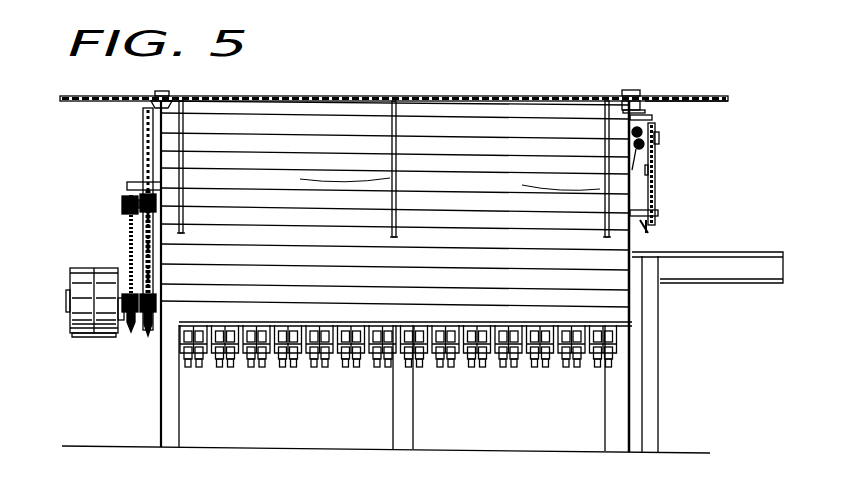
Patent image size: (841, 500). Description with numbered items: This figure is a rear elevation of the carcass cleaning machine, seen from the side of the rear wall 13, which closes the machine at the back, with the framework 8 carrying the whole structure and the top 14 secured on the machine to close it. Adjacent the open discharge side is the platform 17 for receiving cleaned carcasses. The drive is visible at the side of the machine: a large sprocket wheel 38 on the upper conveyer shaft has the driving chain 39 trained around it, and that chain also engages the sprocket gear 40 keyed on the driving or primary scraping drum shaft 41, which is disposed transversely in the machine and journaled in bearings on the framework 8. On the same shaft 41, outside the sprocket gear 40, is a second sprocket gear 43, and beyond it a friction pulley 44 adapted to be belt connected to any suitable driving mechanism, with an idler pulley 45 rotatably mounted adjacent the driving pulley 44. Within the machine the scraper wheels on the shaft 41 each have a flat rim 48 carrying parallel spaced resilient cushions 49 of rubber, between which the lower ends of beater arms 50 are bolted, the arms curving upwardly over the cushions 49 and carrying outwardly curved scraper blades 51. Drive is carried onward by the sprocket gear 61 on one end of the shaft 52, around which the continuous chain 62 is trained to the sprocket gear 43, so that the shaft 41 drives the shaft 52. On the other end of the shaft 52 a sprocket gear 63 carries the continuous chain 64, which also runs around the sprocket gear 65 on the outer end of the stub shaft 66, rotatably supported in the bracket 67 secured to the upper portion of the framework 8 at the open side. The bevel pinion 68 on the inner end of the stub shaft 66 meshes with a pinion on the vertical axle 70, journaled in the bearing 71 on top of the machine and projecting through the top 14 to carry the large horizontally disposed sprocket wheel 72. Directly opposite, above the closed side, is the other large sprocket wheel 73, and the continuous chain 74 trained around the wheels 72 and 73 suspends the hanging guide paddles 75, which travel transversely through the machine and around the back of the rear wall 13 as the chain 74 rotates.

The framework 8 is at (386, 389).
The rear wall 13 is at (395, 276).
The top 14 is at (492, 118).
The platform 17 is at (697, 256).
The large sprocket wheel 38 is at (143, 112).
The driving chain 39 is at (153, 284).
The sprocket gear 40 is at (149, 322).
The driving or primary scraping drum shaft 41 is at (160, 305).
The second sprocket gear 43 is at (124, 324).
The friction pulley 44 is at (104, 339).
The idler pulley 45 is at (76, 274).
The rim 48 is at (596, 330).
The resilient supports or cushions 49 is at (590, 337).
The beater arms 50 is at (590, 350).
The scraper blades 51 is at (596, 373).
The shaft 52 is at (649, 229).
The sprocket gear 61 is at (122, 205).
The continuous chain 62 is at (129, 238).
The sprocket gear 63 is at (658, 214).
The continuous chain 64 is at (656, 176).
The sprocket gear 65 is at (659, 139).
The stub shaft 66 is at (648, 172).
The bracket 67 is at (652, 112).
The bevel pinion 68 is at (636, 142).
The vertical axle 70 is at (652, 119).
The bearing 71 is at (634, 96).
The large horizontally disposed sprocket wheel 72 is at (641, 110).
The large horizontally mounted sprocket wheel 73 is at (165, 95).
The continuous chain 74 is at (333, 98).
The guide separators, partitions or paddles 75 is at (436, 182).